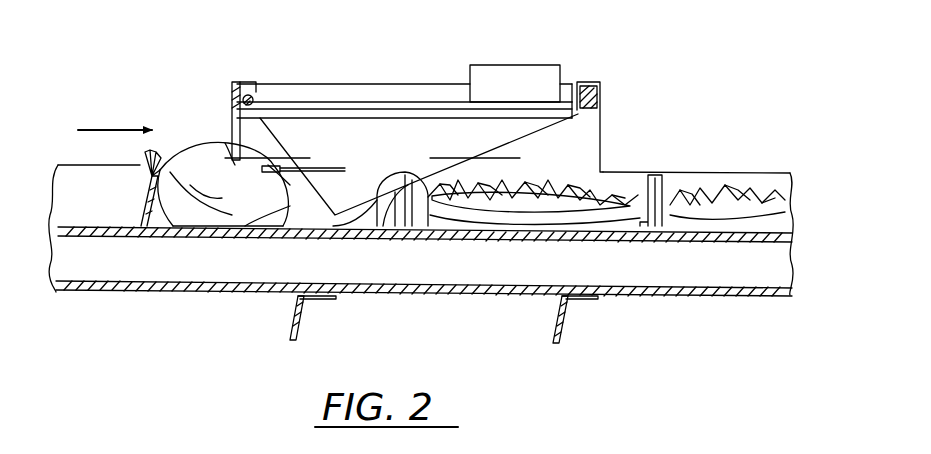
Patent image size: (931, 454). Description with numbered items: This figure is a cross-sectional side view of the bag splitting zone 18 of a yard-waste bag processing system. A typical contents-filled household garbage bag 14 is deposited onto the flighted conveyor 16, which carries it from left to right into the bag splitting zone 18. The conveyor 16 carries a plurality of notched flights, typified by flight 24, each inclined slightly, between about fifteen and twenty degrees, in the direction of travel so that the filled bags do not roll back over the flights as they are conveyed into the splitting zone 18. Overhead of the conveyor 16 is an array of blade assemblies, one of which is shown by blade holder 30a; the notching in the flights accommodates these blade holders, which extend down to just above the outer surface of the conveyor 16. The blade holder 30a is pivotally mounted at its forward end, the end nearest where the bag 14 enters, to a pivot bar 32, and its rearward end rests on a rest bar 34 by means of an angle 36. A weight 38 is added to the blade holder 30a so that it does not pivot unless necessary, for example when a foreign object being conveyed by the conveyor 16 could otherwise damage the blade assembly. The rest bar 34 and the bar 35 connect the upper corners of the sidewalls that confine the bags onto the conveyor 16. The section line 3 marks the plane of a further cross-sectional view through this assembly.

The section line 3- 3 is at (247, 118).
The garbage bag 14 is at (208, 150).
The flighted conveyor 16 is at (668, 296).
The bag splitting zone 18 is at (445, 115).
The flight 24 is at (302, 309).
The blade holder 30a is at (400, 161).
The pivot bar 32 is at (250, 97).
The rest bar 34 is at (600, 98).
The bar 35 is at (232, 95).
The angle 36 is at (588, 78).
The weight 38 is at (513, 72).